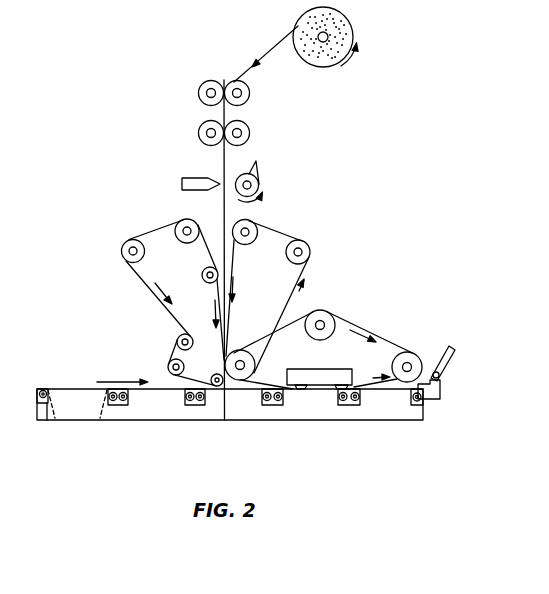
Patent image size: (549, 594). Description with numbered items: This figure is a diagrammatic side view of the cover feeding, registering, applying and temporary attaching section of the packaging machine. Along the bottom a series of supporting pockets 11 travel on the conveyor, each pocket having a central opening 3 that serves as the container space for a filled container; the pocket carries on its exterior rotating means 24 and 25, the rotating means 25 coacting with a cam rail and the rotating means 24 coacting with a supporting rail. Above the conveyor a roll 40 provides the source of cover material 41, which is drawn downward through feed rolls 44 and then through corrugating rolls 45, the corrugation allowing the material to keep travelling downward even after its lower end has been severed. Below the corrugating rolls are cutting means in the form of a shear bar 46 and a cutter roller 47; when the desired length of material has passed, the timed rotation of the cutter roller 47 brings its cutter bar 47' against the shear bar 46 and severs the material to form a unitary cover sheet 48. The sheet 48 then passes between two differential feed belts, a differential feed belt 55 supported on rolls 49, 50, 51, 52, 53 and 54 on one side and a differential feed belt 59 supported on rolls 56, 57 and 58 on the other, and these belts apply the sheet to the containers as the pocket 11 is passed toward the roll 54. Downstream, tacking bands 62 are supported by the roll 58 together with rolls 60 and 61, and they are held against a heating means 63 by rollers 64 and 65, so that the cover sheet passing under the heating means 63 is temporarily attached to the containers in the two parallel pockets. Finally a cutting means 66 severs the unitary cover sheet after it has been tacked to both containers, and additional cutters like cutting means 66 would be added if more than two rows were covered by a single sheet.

The central opening 3 is at (74, 392).
The supporting pocket 11 is at (148, 410).
The rotating means 24 is at (45, 389).
The rotating means 25 is at (43, 418).
The roll 40 is at (351, 31).
The cover material 41 is at (282, 36).
The feed rolls 44 is at (233, 82).
The corrugating rolls 45 is at (210, 146).
The shear bar 46 is at (182, 184).
The cutter roller 47 is at (271, 188).
The cutter bar 47' is at (280, 169).
The unitary cover sheet 48 is at (224, 229).
The roll 49 is at (184, 220).
The roll 50 is at (122, 251).
The roll 51 is at (204, 270).
The roll 52 is at (177, 342).
The roll 53 is at (168, 367).
The roll 54 is at (224, 420).
The differential feed belt 55 is at (161, 301).
The roll 56 is at (248, 243).
The roll 57 is at (310, 251).
The roll 58 is at (231, 354).
The differential feed belt 59 is at (278, 232).
The roll 60 is at (318, 311).
The roll 61 is at (414, 353).
The tacking bands 62 is at (372, 333).
The heating means 63 is at (321, 369).
The roller 64 is at (304, 390).
The roller 65 is at (337, 391).
The cutting means 66 is at (440, 393).